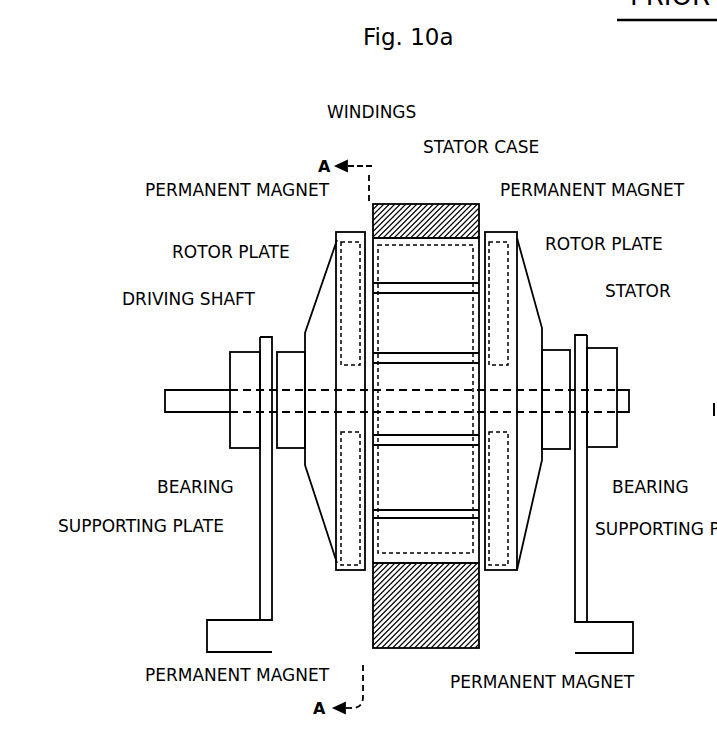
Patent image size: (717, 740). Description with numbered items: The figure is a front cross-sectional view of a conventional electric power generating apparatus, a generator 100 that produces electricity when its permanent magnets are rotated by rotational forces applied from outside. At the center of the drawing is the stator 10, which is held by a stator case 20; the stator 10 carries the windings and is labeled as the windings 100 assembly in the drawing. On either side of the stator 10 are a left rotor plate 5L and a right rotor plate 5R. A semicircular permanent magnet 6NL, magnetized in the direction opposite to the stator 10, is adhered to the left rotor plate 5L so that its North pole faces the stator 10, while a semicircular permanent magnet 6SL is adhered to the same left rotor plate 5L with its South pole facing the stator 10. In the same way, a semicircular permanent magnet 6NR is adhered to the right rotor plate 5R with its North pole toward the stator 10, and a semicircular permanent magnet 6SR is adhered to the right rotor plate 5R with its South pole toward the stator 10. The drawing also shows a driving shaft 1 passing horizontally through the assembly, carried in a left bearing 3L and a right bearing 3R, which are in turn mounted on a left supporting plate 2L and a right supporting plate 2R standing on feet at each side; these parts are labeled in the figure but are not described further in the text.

The driving shaft 1 is at (204, 400).
The supporting plate 2L is at (258, 592).
The supporting plate 2R is at (587, 592).
The bearing 3L is at (242, 442).
The bearing 3R is at (614, 448).
The left rotor plate 5L is at (324, 308).
The right rotor plate 5R is at (520, 289).
The semicircular permanent magnet 6NL is at (350, 229).
The semicircular permanent magnet 6NR is at (502, 232).
The semicircular permanent magnet 6SL is at (350, 576).
The semicircular permanent magnet 6SR is at (493, 574).
The stator 10 is at (498, 387).
The stator case 20 is at (427, 203).
The generator 100 is at (400, 146).